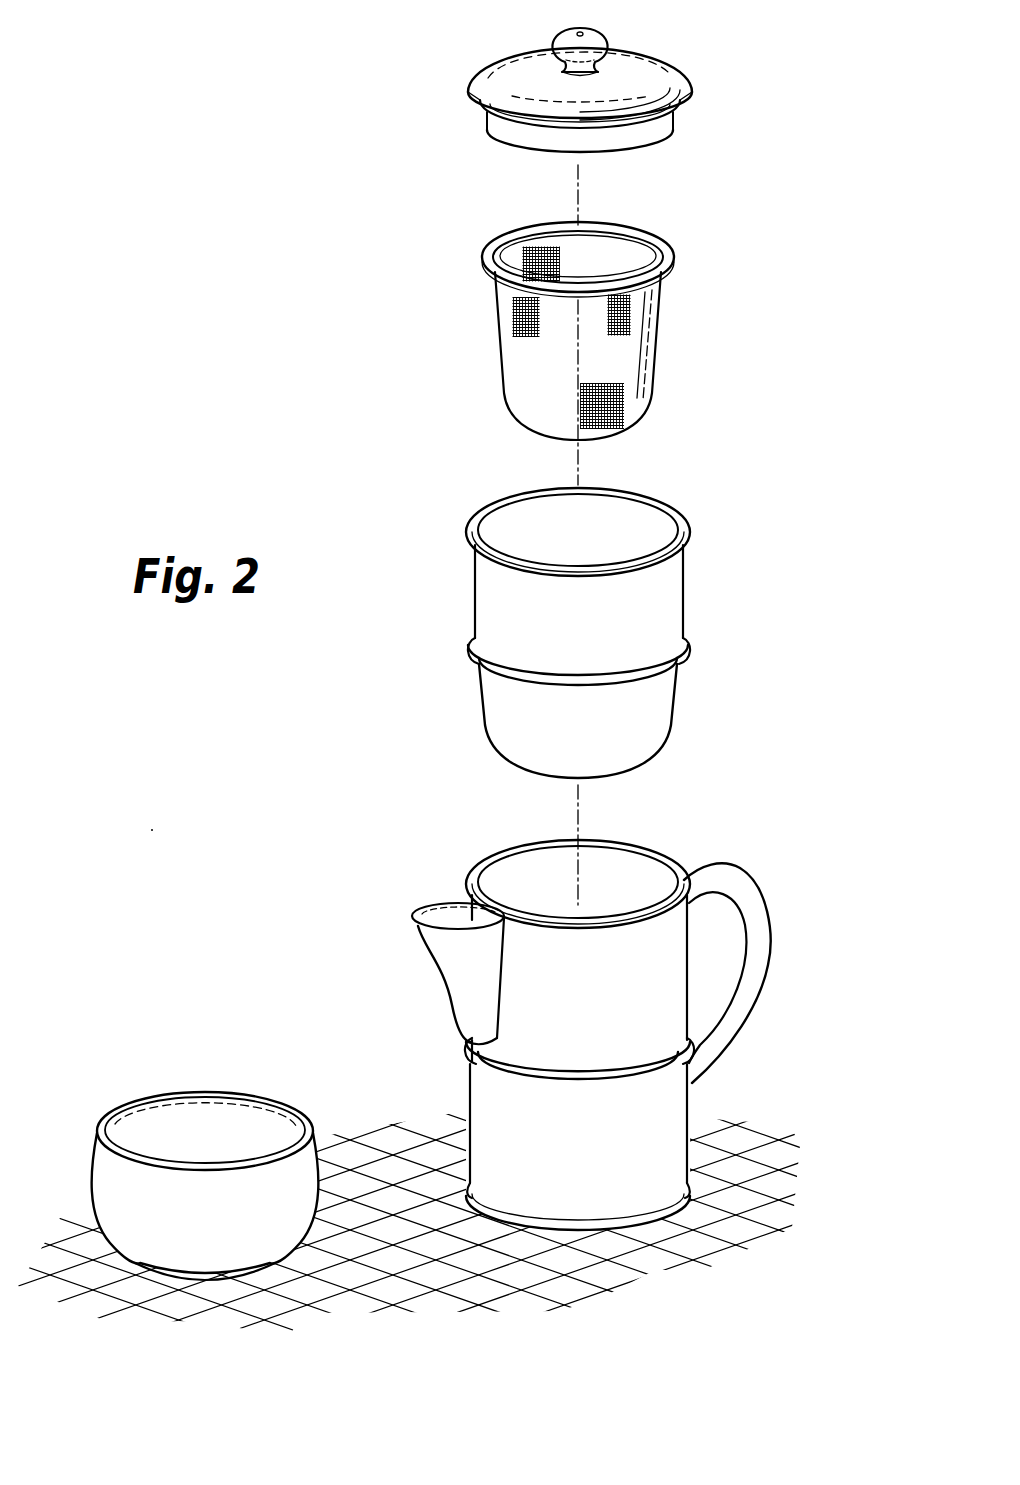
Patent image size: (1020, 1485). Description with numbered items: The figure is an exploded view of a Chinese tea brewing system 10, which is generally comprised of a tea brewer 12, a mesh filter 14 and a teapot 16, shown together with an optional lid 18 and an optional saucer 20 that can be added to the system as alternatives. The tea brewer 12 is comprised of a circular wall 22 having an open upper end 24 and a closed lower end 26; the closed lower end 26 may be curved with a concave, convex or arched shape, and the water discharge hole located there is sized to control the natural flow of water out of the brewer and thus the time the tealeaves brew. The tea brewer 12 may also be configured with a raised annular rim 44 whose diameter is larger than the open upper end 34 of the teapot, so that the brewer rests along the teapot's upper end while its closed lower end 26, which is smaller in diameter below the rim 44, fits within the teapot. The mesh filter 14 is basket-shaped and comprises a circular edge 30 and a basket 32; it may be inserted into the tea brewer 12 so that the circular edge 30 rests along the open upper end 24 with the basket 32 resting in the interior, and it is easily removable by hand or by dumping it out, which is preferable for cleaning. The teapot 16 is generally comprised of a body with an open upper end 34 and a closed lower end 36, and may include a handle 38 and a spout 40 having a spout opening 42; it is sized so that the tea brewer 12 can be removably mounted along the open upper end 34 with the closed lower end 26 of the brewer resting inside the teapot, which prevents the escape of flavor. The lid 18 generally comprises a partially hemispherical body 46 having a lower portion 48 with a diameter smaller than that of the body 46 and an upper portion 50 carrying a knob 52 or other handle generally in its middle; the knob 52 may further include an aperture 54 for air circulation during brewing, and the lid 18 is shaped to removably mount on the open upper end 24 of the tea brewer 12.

The Chinese tea brewing system 10 is at (275, 515).
The tea brewer 12 is at (605, 623).
The mesh filter 14 is at (609, 329).
The teapot 16 is at (582, 1056).
The lid 18 is at (611, 90).
The saucer 20 is at (113, 1177).
The circular wall 22 is at (684, 576).
The open upper end 24 is at (642, 540).
The closed lower end 26 is at (627, 760).
The circular edge 30 is at (670, 255).
The basket 32 is at (640, 335).
The open upper end 34 is at (518, 897).
The closed lower end 36 is at (633, 1220).
The handle 38 is at (730, 873).
The spout 40 is at (437, 951).
The spout opening 42 is at (470, 913).
The raised annular rim 44 is at (690, 648).
The partially hemispherical body 46 is at (692, 72).
The lower portion 48 is at (650, 132).
The upper portion 50 is at (637, 68).
The knob 52 is at (592, 48).
The aperture 54 is at (583, 33).